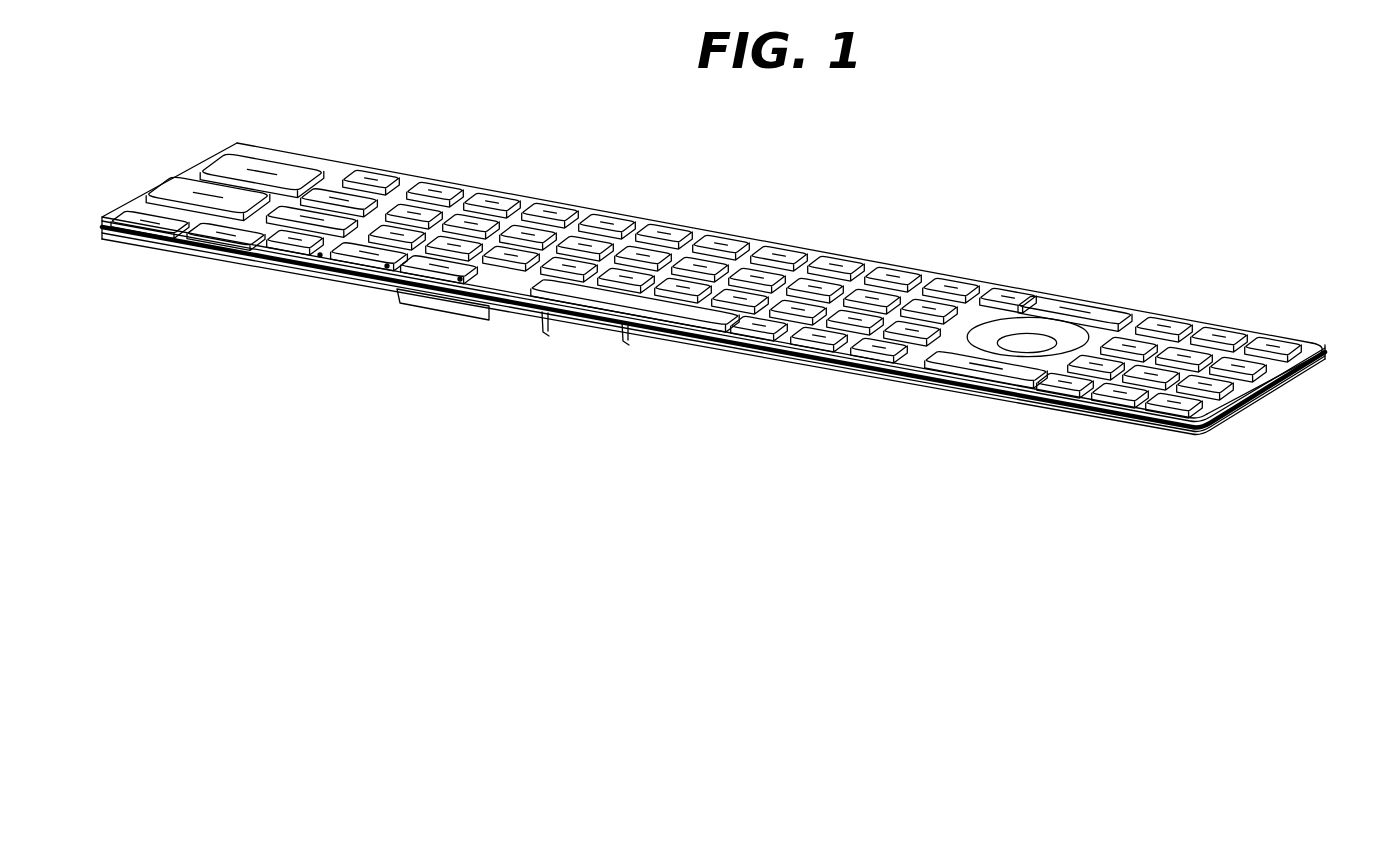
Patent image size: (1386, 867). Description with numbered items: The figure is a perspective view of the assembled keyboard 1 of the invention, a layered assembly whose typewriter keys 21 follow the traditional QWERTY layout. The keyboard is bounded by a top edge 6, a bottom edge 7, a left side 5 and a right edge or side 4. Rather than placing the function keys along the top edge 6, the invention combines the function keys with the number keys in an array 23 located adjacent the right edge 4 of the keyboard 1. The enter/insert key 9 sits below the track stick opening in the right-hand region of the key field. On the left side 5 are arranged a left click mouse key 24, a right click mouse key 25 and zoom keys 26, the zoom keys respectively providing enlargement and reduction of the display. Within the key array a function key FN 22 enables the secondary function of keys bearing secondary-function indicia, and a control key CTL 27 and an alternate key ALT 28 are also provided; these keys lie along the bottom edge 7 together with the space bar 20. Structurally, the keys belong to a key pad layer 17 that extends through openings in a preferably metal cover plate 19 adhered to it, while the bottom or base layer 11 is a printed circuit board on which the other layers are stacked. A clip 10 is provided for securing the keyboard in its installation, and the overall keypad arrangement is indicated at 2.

The keyboard 1 is at (750, 402).
The keypad 2 is at (322, 173).
The right edge or side 4 is at (1197, 430).
The left side 5 is at (148, 190).
The top edge 6 is at (418, 172).
The bottom edge 7 is at (910, 387).
The enter/insert key 9 is at (993, 377).
The clip 10 is at (552, 343).
The bottom or base layer 11 is at (1110, 427).
The key pad layer 17 is at (320, 180).
The cover plate 19 is at (1313, 343).
The space bar 20 is at (633, 302).
The typewriter keys 21 is at (977, 265).
The function key FN 22 is at (282, 250).
The array 23 is at (1165, 304).
The left click mouse key 24 is at (236, 146).
The right click mouse key 25 is at (186, 170).
The zoom keys 26 is at (243, 273).
The control key CTL 27 is at (357, 258).
The alternate key ALT 28 is at (427, 267).